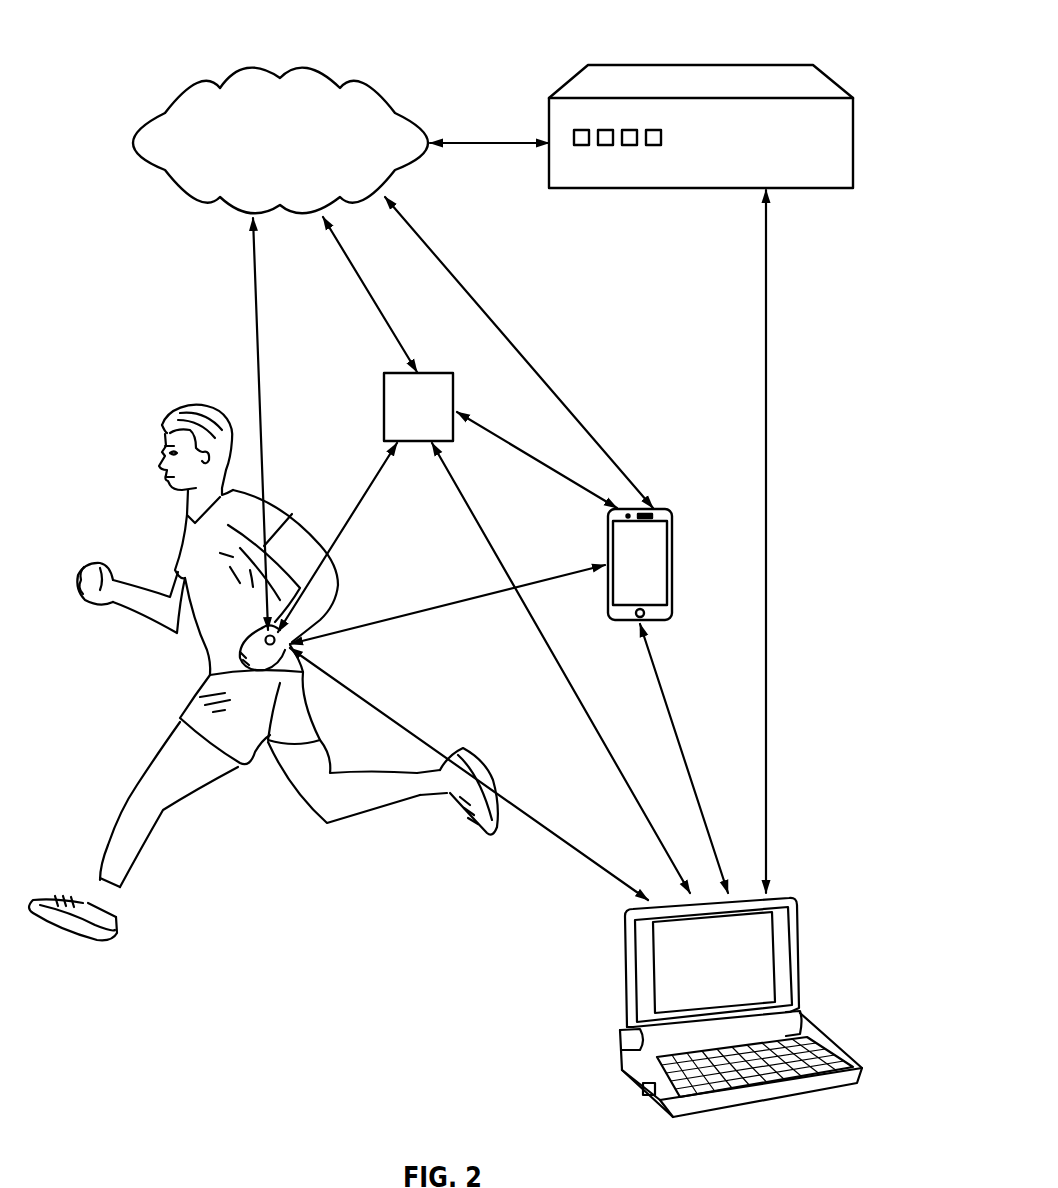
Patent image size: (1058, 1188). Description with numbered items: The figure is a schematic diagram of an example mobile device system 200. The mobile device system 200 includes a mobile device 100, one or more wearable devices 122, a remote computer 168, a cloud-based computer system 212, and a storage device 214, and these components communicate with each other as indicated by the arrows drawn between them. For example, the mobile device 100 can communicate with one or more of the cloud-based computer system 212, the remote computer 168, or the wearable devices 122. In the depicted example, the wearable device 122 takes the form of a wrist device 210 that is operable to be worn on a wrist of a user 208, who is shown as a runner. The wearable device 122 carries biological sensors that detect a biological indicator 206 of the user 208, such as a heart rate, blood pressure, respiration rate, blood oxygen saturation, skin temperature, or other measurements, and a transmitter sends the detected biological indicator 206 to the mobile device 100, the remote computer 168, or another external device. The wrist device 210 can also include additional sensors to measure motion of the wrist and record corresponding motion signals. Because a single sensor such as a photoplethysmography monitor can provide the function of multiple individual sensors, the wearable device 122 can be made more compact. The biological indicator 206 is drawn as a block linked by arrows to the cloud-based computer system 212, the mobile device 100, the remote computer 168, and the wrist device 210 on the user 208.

The mobile device system 200 is at (180, 55).
The cloud-based computer system 212 is at (302, 157).
The storage device 214 is at (735, 45).
The biological indicator 206 is at (440, 421).
The mobile device 100 is at (672, 497).
The remote computer 168 is at (585, 960).
The user 208 is at (138, 442).
The wrist device 210 is at (285, 650).
The wearable device 122 is at (250, 630).